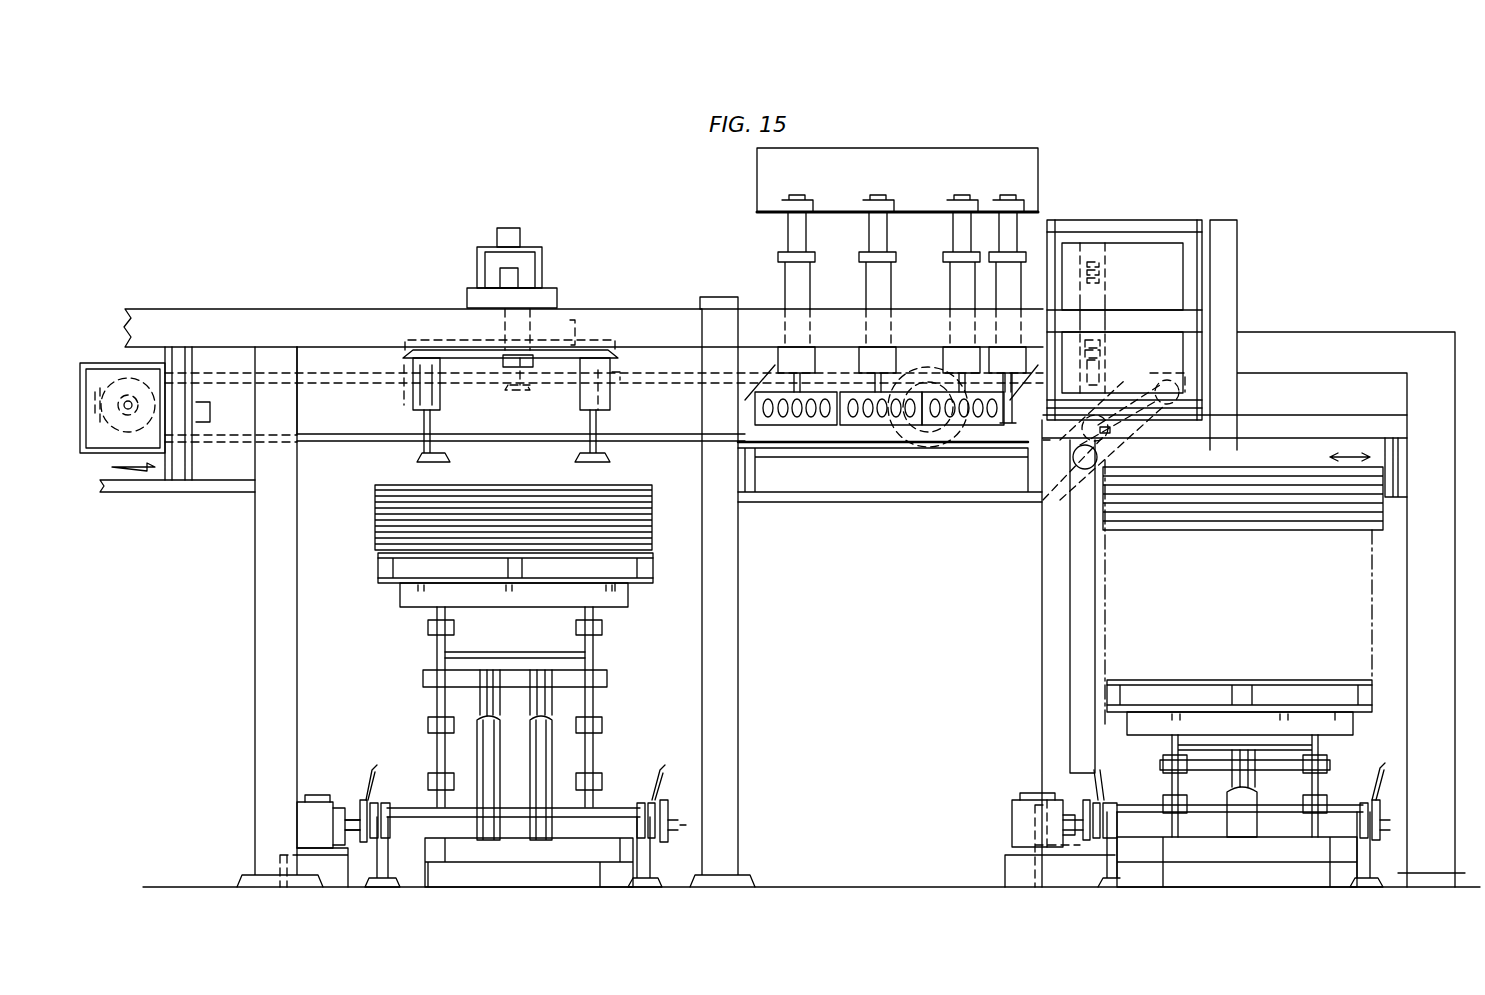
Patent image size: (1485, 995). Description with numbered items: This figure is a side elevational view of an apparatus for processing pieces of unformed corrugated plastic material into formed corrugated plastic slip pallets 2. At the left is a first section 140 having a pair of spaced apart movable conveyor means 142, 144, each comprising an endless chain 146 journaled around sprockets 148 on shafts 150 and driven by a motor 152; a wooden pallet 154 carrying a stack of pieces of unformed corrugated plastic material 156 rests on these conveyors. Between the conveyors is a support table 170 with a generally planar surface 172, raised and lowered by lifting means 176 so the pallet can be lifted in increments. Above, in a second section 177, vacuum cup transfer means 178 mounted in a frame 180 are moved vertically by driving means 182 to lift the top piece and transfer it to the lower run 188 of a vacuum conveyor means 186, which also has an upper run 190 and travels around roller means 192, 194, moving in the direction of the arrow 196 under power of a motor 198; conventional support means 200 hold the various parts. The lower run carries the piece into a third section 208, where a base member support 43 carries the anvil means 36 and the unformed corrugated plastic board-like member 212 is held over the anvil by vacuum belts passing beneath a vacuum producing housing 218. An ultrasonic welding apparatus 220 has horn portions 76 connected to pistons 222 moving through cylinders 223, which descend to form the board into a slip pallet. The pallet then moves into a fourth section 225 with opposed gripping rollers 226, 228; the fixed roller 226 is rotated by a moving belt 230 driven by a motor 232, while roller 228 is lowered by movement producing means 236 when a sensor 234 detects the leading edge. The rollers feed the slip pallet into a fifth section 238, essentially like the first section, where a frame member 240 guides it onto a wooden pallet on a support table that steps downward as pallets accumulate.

The corrugated plastic slip pallet 2 is at (1385, 522).
The anvil means 36 is at (892, 448).
The base member support 43 is at (772, 485).
The horn portions 76 is at (815, 392).
The first section 140 is at (287, 788).
The movable conveyor means 142 is at (366, 753).
The movable conveyor means 144 is at (668, 747).
The endless chain 146 is at (378, 803).
The sprockets 148 is at (400, 835).
The shafts 150 is at (520, 815).
The motor 152 is at (1012, 822).
The wooden pallet 154 is at (378, 575).
The pieces of unformed corrugated plastic material 156 is at (378, 533).
The support table 170 is at (400, 605).
The generally planar surface 172 is at (630, 596).
The lifting means 176 is at (642, 692).
The second section 177 is at (340, 476).
The vacuum cup transfer means 178 is at (410, 425).
The frame 180 is at (540, 350).
The driving means 182 is at (535, 300).
The vacuum conveyor means 186 is at (243, 501).
The lower run 188 is at (312, 450).
The upper run 190 is at (220, 372).
The roller means 192 is at (130, 398).
The roller means 194 is at (935, 388).
The arrow 196 is at (123, 482).
The motor 198 is at (90, 362).
The support means 200 is at (355, 308).
The third section 208 is at (872, 486).
The unformed corrugated plastic board-like member 212 is at (958, 448).
The vacuum producing housing 218 is at (753, 436).
The ultrasonic welding apparatus 220 is at (1041, 179).
The pistons 222 is at (870, 217).
The cylinders 223 is at (876, 300).
The fourth section 225 is at (1205, 433).
The gripping roller 226 is at (1045, 505).
The gripping roller 228 is at (1105, 395).
The moving belt 230 is at (1175, 442).
The motor 232 is at (1183, 375).
The sensor 234 is at (1060, 438).
The movement producing means 236 is at (1092, 305).
The fifth section 238 is at (1398, 453).
The frame member 240 is at (1370, 440).